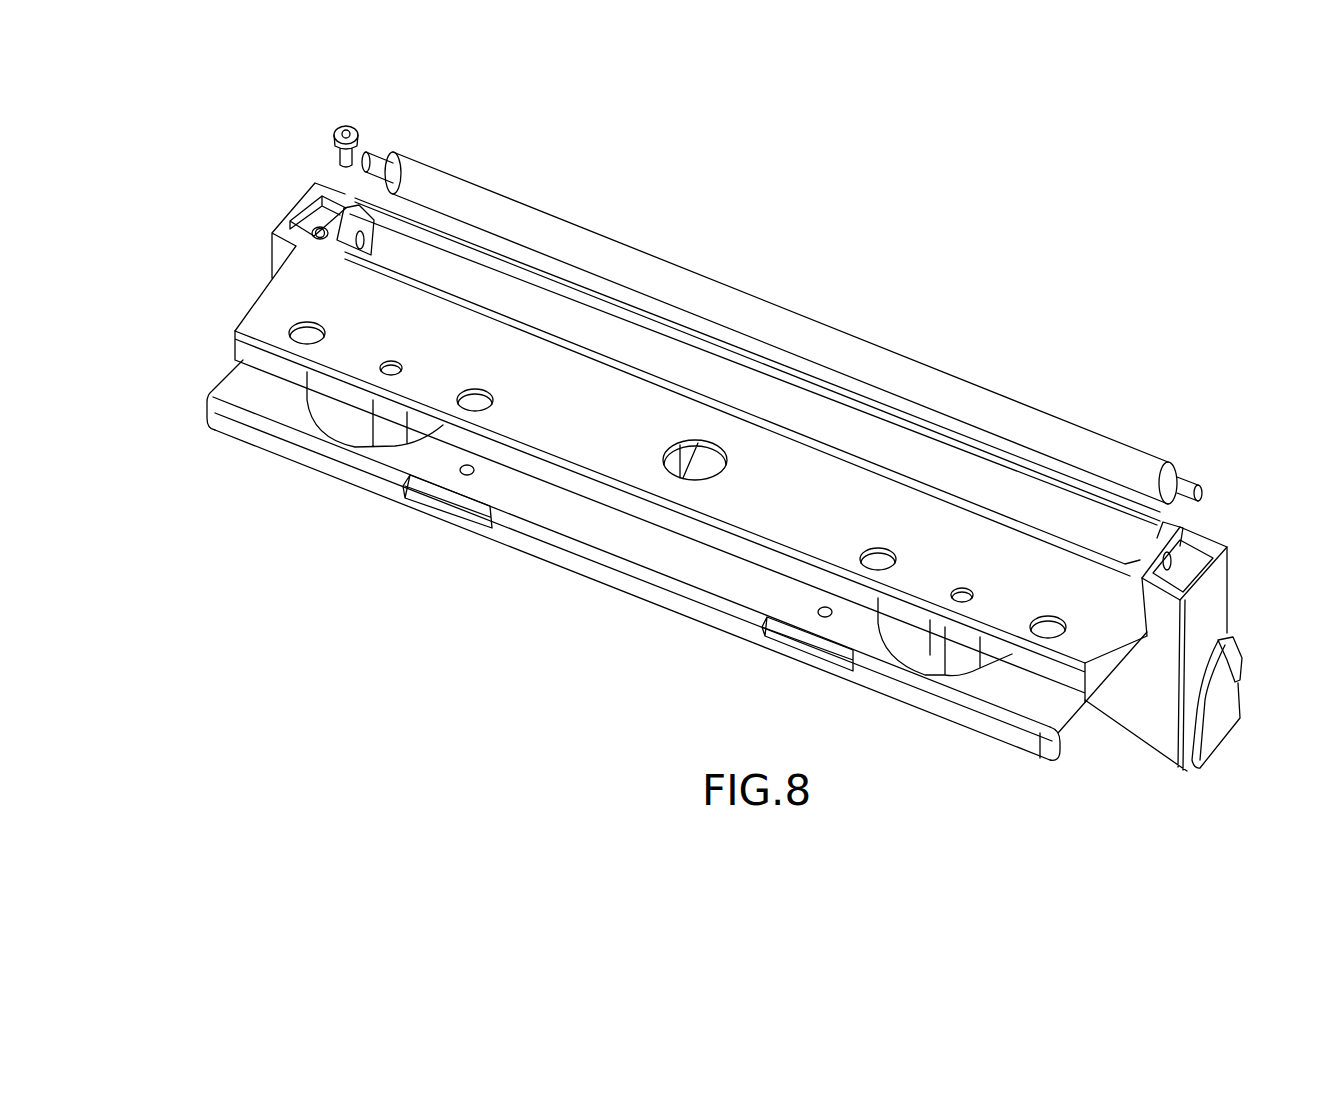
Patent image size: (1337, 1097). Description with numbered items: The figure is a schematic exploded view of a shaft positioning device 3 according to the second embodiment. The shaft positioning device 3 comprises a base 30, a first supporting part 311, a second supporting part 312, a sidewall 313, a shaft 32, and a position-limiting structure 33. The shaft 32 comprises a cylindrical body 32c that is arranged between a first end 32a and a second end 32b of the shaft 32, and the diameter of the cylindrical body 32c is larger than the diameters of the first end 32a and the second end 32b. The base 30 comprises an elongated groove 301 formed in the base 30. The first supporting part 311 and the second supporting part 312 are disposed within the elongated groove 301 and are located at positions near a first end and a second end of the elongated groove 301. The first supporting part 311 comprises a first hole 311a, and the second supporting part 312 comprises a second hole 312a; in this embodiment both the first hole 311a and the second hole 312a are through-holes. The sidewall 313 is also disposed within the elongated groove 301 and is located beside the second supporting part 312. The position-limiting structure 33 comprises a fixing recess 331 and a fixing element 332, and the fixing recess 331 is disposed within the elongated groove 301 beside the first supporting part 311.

The shaft positioning device 3 is at (1157, 244).
The base 30 is at (762, 520).
The elongated groove 301 is at (652, 362).
The first supporting part 311 is at (330, 216).
The first hole 311a is at (370, 243).
The second supporting part 312 is at (1198, 635).
The second hole 312a is at (1172, 562).
The sidewall 313 is at (1212, 557).
The shaft 32 is at (813, 314).
The first end 32a is at (378, 160).
The second end 32b is at (1190, 476).
The cylindrical body 32c is at (975, 395).
The position-limiting structure 33 is at (235, 97).
The fixing recess 331 is at (321, 228).
The fixing element 332 is at (340, 128).